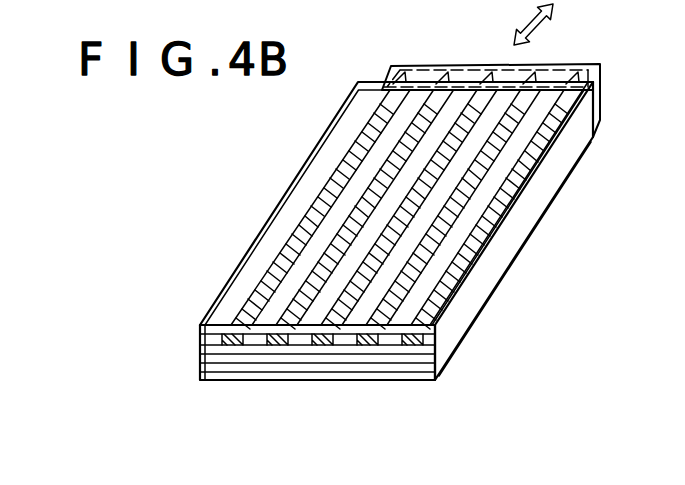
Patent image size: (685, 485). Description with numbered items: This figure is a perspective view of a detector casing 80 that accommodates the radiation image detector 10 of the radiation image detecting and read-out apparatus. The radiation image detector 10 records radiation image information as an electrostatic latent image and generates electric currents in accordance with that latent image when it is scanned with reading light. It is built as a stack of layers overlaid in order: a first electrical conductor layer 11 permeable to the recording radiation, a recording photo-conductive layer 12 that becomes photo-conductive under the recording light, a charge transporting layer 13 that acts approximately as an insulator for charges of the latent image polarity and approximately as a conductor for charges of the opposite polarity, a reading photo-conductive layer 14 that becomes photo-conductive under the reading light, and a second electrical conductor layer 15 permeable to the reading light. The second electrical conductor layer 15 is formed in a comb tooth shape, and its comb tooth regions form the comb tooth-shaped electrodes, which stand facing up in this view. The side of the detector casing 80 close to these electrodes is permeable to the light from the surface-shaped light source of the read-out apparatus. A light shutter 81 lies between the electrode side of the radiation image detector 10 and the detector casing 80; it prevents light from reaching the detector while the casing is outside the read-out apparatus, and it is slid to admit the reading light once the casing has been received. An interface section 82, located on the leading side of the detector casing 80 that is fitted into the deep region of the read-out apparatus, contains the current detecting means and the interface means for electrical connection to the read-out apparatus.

The radiation image detector 10 is at (318, 275).
The first electrical conductor layer 11 is at (272, 419).
The recording photo-conductive layer 12 is at (200, 370).
The charge transporting layer 13 is at (200, 361).
The reading photo-conductive layer 14 is at (200, 352).
The second electrical conductor layer 15 is at (200, 345).
The detector casing 80 is at (355, 232).
The light shutter 81 is at (560, 154).
The interface section 82 is at (599, 108).